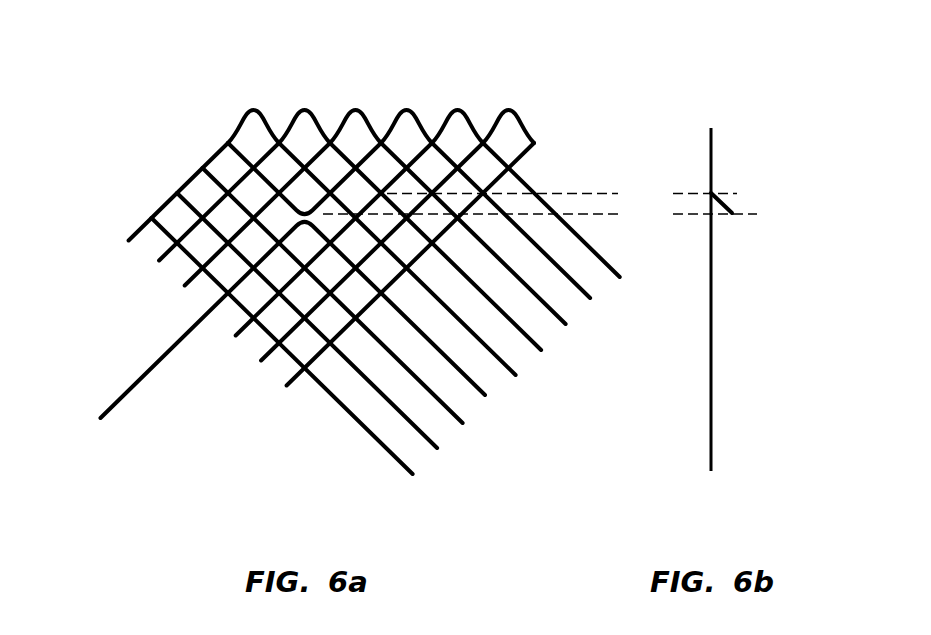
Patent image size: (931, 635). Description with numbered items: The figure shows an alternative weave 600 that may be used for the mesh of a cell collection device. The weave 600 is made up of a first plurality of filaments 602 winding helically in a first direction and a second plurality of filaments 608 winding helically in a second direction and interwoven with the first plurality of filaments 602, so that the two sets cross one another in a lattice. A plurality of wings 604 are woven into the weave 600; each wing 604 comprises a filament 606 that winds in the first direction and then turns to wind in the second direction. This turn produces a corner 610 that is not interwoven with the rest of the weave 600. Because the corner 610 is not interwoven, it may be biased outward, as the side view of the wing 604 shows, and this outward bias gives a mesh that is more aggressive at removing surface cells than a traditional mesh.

In FIG. 6A, the weave 600 is at (130, 167).
In FIG. 6A, the first plurality of filaments 602 is at (545, 301).
In FIG. 6A, the wing 604 is at (302, 205).
In FIG. 6B, the wing 604 is at (731, 195).
In FIG. 6A, the filament 606 is at (332, 188).
In FIG. 6A, the second plurality of filaments 608 is at (286, 385).
In FIG. 6A, the corner 610 is at (300, 228).